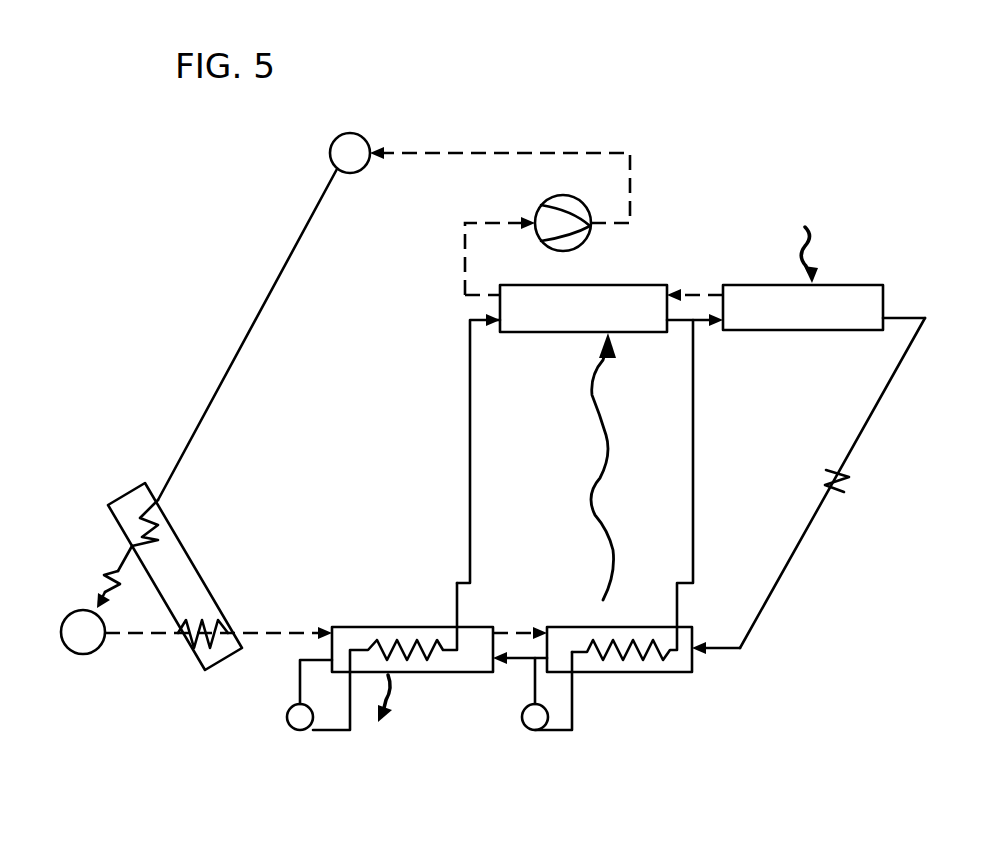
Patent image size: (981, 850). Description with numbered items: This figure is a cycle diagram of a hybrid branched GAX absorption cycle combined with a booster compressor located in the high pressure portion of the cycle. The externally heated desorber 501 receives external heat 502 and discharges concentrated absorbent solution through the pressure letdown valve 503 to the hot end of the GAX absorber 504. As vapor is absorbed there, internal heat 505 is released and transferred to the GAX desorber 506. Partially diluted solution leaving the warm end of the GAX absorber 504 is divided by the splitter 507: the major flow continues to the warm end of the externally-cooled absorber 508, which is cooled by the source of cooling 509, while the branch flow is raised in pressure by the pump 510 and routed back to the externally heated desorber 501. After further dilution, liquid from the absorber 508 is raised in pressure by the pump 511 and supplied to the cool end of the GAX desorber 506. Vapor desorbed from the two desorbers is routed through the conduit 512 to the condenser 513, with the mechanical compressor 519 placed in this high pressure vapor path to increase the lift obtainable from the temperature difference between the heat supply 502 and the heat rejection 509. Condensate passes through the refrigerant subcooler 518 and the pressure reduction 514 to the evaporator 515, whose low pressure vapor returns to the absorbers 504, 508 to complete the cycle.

The externally heated desorber 501 is at (837, 284).
The external heat 502 is at (806, 241).
The pressure letdown valve 503 is at (838, 493).
The GAX absorber 504 is at (665, 673).
The internal heat 505 is at (615, 550).
The GAX desorber 506 is at (601, 285).
The splitter 507 is at (578, 626).
The externally-cooled absorber 508 is at (413, 626).
The source of cooling 509 is at (393, 702).
The pump 510 is at (532, 729).
The pump 511 is at (290, 714).
The conduit 512 is at (465, 253).
The condenser 513 is at (364, 121).
The pressure reduction 514 is at (108, 575).
The evaporator 515 is at (86, 654).
The refrigerant subcooler 518 is at (204, 574).
The mechanical compressor 519 is at (560, 196).